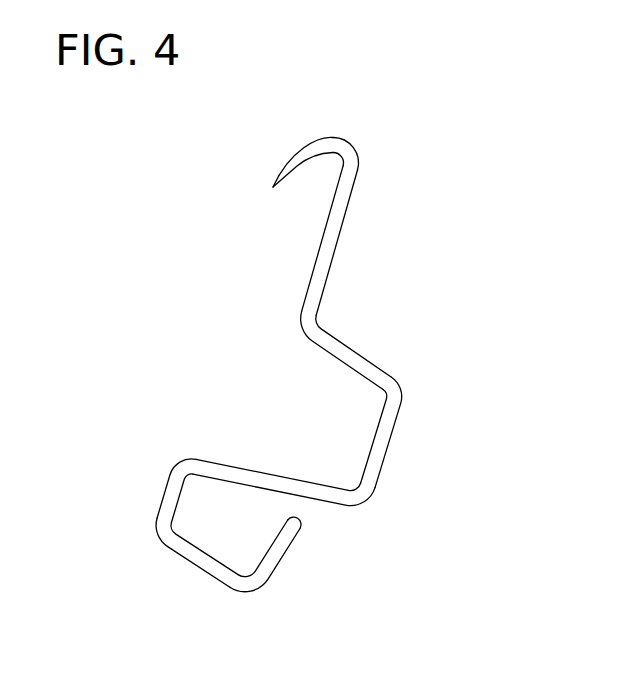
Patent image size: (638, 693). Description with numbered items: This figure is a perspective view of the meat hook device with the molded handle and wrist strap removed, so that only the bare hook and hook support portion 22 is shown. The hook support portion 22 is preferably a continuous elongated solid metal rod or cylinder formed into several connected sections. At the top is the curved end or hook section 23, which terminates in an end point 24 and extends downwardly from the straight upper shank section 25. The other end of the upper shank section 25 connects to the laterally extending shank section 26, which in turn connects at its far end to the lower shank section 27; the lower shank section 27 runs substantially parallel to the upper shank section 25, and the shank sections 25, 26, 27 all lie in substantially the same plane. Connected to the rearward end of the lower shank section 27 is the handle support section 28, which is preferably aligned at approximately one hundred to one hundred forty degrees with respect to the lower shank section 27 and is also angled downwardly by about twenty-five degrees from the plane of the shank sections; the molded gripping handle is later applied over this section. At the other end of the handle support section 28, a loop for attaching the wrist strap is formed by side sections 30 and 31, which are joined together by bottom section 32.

The hook support portion 22 is at (352, 331).
The curved end or hook section 23 is at (344, 150).
The end point 24 is at (287, 170).
The upper shank section 25 is at (333, 244).
The laterally extending shank section 26 is at (343, 358).
The lower shank section 27 is at (382, 447).
The handle support section 28 is at (264, 478).
The side section 30 is at (173, 492).
The side section 31 is at (283, 547).
The bottom section 32 is at (190, 558).